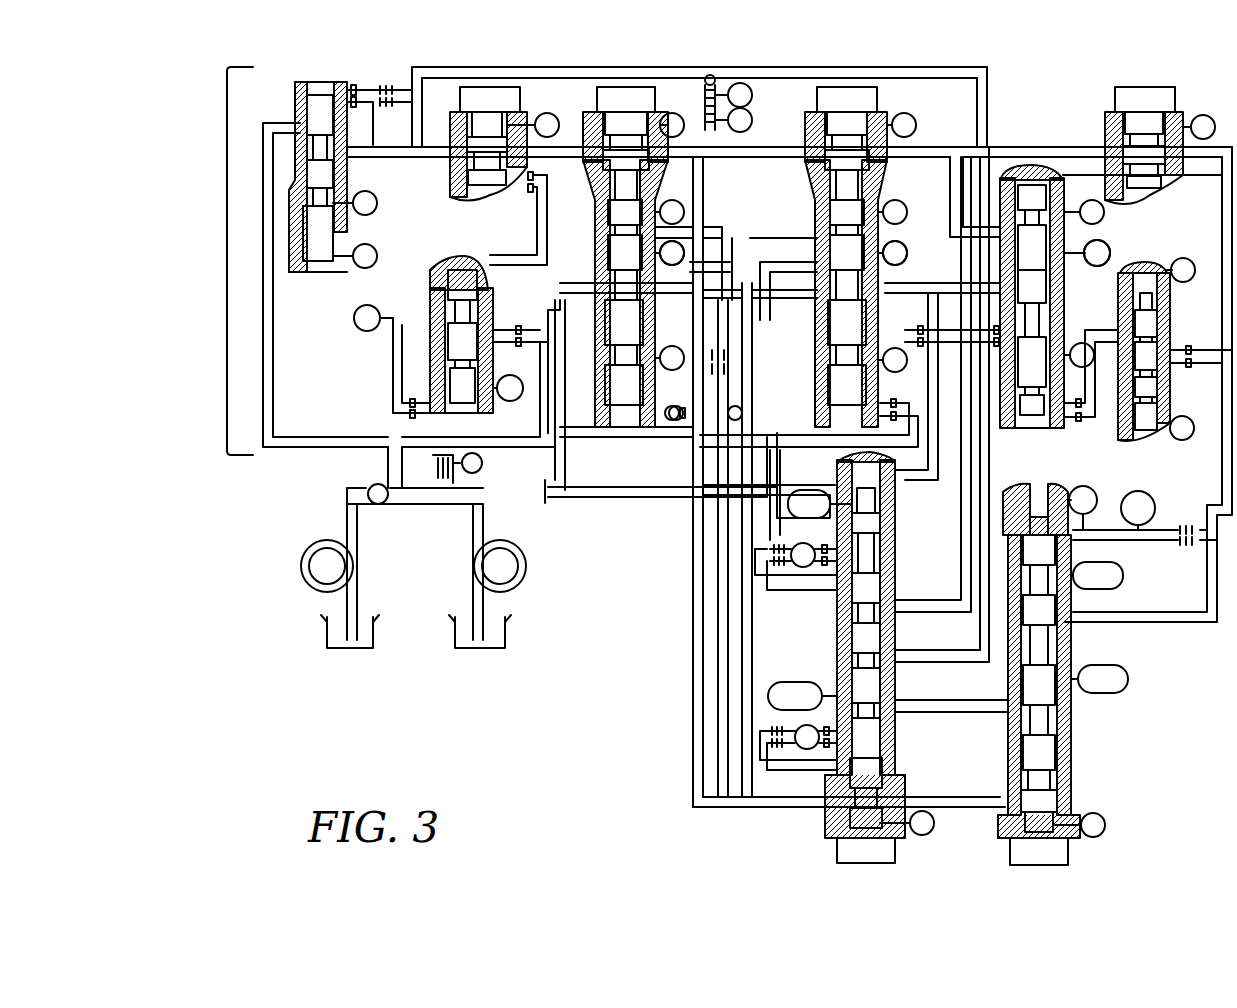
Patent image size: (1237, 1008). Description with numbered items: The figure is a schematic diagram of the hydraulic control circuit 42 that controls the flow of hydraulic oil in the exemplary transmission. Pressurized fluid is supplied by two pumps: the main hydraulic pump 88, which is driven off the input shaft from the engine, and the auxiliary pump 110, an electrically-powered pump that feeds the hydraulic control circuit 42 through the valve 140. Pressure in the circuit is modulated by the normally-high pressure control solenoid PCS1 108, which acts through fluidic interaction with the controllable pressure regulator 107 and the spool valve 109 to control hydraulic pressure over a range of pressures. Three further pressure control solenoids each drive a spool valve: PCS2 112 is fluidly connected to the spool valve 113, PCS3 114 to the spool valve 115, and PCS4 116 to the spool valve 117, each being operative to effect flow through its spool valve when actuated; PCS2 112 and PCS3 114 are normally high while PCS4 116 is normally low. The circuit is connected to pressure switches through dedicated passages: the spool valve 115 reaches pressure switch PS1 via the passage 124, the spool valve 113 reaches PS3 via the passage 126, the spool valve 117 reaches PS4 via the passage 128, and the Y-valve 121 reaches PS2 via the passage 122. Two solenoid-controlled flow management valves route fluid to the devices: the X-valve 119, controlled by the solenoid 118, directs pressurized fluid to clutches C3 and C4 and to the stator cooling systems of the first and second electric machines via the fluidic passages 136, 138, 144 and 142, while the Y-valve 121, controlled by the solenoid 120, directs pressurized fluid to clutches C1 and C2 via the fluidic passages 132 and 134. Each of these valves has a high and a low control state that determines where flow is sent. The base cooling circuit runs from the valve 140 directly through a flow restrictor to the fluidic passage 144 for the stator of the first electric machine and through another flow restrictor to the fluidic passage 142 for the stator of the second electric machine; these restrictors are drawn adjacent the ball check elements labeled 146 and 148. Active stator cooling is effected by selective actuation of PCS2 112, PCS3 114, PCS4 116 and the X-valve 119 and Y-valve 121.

The hydraulic control circuit 42 is at (226, 147).
The main hydraulic pump 88 is at (507, 588).
The controllable pressure regulator 107 is at (318, 268).
The pressure control solenoid PCS1 108 is at (490, 85).
The spool valve 109 is at (485, 280).
The auxiliary pump 110 is at (320, 588).
The pressure control solenoid PCS2 112 is at (1125, 90).
The spool valve 113 is at (1035, 287).
The pressure control solenoid PCS3 114 is at (834, 232).
The spool valve 115 is at (830, 215).
The pressure control solenoid PCS4 116 is at (616, 232).
The spool valve 117 is at (620, 232).
The solenoid 118 is at (850, 856).
The X-valve 119 is at (852, 628).
The solenoid 120 is at (1020, 858).
The Y-valve 121 is at (1050, 725).
The passage 122 is at (1135, 500).
The passage 124 is at (905, 248).
The passage 126 is at (1105, 245).
The passage 128 is at (680, 245).
The fluidic passage 132 is at (1125, 679).
The fluidic passage 134 is at (1120, 575).
The fluidic passage 136 is at (790, 684).
The fluidic passage 138 is at (805, 496).
The valve 140 is at (370, 488).
The fluidic passage 142 is at (805, 750).
The fluidic passage 144 is at (802, 568).
The orifice 146 is at (779, 566).
The orifice 148 is at (775, 748).